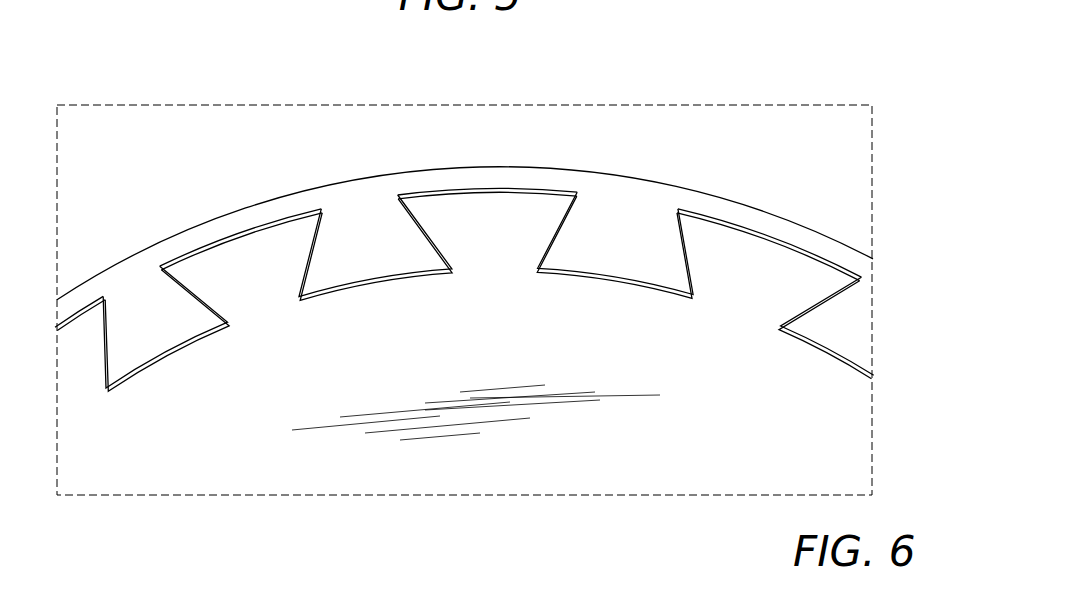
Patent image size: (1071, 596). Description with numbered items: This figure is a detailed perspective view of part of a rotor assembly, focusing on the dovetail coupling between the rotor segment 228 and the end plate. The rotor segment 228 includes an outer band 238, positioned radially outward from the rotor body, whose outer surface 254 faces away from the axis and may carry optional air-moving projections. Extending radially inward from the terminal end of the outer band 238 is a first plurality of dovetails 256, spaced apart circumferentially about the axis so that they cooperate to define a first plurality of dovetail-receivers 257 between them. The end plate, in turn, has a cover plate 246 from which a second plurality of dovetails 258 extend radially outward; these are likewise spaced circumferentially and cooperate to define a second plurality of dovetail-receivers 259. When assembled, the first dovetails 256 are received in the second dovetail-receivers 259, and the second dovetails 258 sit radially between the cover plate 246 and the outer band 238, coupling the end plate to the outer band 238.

In FIG. 5, the rotor segment 228 is at (841, 57).
In FIG. 6, the outer band 238 is at (486, 155).
In FIG. 6, the cover plate 246 is at (563, 476).
In FIG. 6, the outer surface of the outer band 254 is at (577, 170).
In FIG. 6, the first plurality of dovetails 256 is at (135, 300).
In FIG. 6, the first plurality of dovetail-receivers 257 is at (230, 218).
In FIG. 6, the second plurality of dovetails 258 is at (496, 255).
In FIG. 6, the second plurality of dovetail-receivers 259 is at (614, 305).